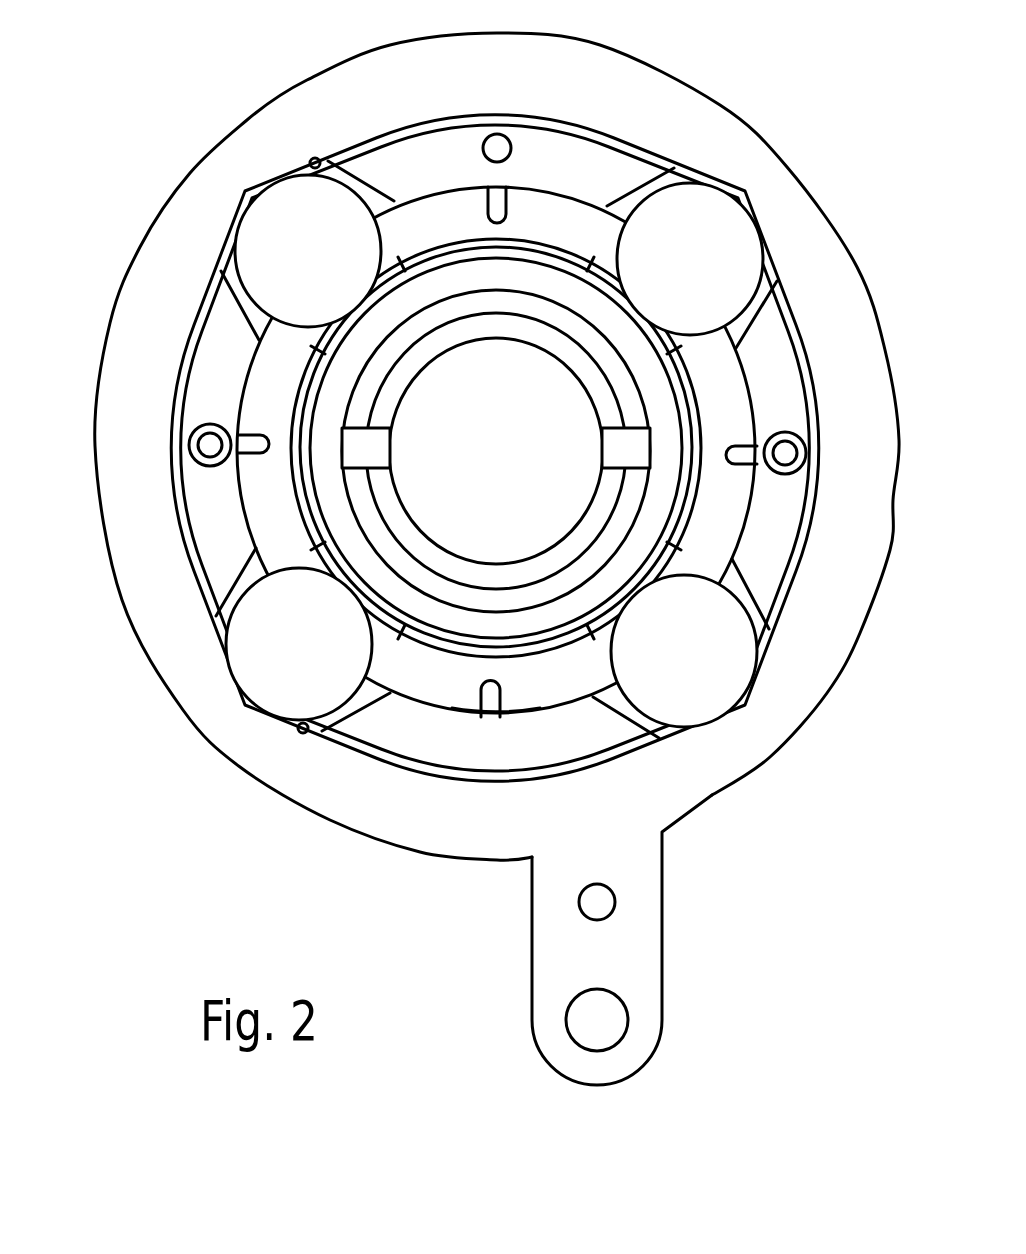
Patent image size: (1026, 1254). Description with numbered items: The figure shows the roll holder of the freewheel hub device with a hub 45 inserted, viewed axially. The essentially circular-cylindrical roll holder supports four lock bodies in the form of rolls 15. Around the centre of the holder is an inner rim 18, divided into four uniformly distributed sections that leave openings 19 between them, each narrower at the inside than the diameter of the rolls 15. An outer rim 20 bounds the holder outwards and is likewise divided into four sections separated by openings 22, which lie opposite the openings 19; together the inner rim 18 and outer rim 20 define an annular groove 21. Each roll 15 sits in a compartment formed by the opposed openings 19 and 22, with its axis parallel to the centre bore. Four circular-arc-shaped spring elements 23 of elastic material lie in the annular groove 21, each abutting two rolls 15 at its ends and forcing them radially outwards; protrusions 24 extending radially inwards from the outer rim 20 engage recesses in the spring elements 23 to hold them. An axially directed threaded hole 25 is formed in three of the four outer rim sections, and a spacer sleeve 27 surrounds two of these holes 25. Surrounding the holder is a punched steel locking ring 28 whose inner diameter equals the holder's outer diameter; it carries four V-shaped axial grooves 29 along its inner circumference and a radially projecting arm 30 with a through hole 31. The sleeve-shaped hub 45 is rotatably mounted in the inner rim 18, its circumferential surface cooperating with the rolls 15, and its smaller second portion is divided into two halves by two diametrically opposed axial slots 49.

The rolls 15 is at (292, 212).
The inner rim 18 is at (483, 242).
The openings 19 is at (612, 270).
The outer rim 20 is at (592, 150).
The annular groove 21 is at (422, 708).
The openings 22 is at (360, 195).
The spring elements 23 is at (540, 212).
The protrusions 24 is at (486, 197).
The threaded hole 25 is at (500, 138).
The spacer sleeve 27 is at (800, 466).
The locking ring 28 is at (132, 632).
The axial grooves 29 is at (312, 158).
The radially projecting arm 30 is at (640, 941).
The through hole 31 is at (584, 1032).
The hub 45 is at (488, 338).
The axial slots 49 is at (380, 440).